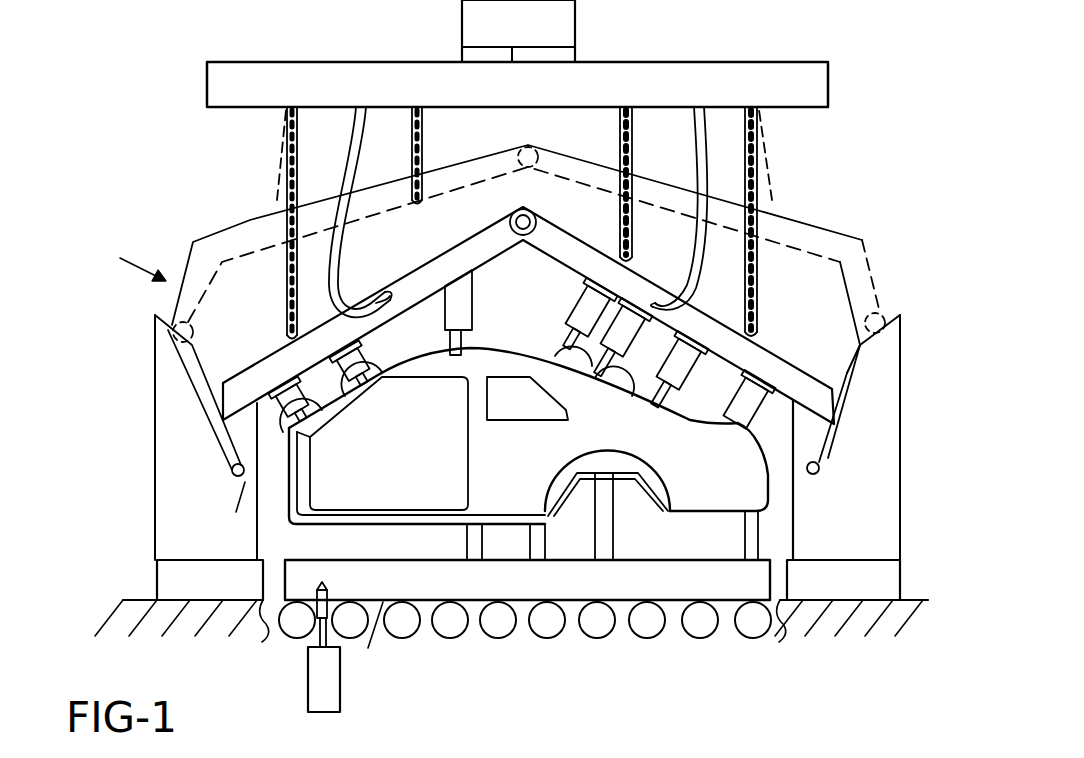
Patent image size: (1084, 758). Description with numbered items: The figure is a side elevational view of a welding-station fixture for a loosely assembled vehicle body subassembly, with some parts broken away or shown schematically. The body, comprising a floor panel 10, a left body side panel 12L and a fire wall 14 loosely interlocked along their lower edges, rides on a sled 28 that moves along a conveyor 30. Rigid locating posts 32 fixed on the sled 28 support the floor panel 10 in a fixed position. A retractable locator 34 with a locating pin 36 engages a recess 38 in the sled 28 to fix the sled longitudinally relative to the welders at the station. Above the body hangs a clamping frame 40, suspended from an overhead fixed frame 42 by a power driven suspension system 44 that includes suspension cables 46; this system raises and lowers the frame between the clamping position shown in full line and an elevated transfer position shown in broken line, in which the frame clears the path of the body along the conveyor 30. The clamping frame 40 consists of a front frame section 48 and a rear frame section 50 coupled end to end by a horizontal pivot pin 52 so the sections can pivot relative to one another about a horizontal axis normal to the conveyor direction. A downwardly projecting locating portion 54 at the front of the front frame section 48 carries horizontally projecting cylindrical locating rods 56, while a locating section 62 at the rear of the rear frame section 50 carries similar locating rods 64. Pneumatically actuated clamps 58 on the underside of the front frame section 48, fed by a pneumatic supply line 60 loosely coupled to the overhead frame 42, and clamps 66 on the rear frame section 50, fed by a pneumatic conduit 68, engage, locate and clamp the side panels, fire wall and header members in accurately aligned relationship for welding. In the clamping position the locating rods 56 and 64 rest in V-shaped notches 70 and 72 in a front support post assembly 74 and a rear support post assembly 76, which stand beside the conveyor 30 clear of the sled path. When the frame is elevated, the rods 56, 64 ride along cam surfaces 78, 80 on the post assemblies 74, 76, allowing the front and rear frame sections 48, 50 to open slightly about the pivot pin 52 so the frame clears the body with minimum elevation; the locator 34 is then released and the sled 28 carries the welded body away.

The floor panel 10 is at (567, 508).
The left body side panel 12L is at (526, 480).
The fire wall 14 is at (295, 492).
The sled 28 is at (367, 640).
The conveyor 30 is at (595, 637).
The locating posts 32 is at (352, 542).
The retractable locator 34 is at (300, 679).
The locating pin 36 is at (373, 600).
The recess 38 is at (313, 592).
The clamping frame 40 is at (600, 212).
The overhead fixed frame 42 is at (742, 43).
The power driven suspension system 44 is at (456, 26).
The suspension cables 46 is at (285, 188).
The front frame section 48 is at (380, 283).
The rear frame section 50 is at (792, 368).
The horizontal pivot pin 52 is at (519, 235).
The locating portion 54 is at (233, 432).
The locating rods 56 is at (232, 471).
The pneumatically actuated clamps 58 is at (330, 412).
The pneumatic supply line 60 is at (353, 172).
The locating section 62 is at (818, 441).
The locating rods 64 is at (793, 461).
The pneumatically actuated clamps 66 is at (582, 342).
The pneumatic conduit 68 is at (688, 268).
The V-shaped notch 70 is at (227, 512).
The V-shaped notch 72 is at (808, 462).
The front support post assembly 74 is at (233, 545).
The rear support post assembly 76 is at (813, 500).
The cam surface 78 is at (192, 384).
The cam surface 80 is at (850, 374).